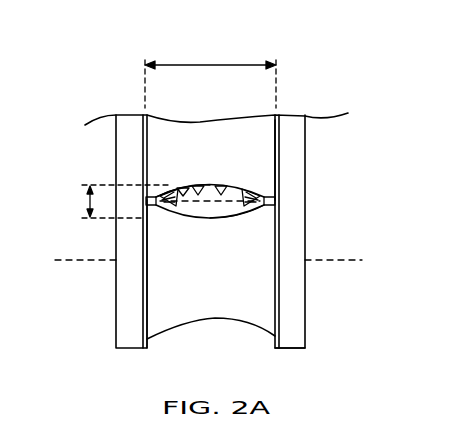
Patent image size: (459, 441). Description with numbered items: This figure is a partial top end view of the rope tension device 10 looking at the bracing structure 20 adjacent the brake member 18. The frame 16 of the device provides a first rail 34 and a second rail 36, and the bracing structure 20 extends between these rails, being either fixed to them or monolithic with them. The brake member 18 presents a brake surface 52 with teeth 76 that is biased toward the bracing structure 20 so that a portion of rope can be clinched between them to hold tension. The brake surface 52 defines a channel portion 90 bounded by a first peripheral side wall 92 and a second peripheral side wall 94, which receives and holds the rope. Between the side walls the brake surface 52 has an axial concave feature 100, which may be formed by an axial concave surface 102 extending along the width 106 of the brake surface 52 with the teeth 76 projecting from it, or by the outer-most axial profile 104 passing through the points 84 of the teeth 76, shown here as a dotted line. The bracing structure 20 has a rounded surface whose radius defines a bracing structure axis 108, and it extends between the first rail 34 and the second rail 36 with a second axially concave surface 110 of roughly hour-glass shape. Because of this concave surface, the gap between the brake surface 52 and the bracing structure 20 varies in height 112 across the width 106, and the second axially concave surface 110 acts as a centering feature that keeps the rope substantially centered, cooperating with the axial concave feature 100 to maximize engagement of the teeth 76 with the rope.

The rope tension device 10 is at (340, 92).
The frame 16 is at (316, 350).
The brake member 18 is at (268, 150).
The bracing structure 20 is at (237, 324).
The first rail 34 is at (117, 321).
The second rail 36 is at (305, 321).
The brake surface 52 is at (208, 220).
The teeth 76 is at (175, 197).
The points 84 is at (178, 212).
The channel portion 90 is at (248, 211).
The first peripheral side wall 92 is at (147, 203).
The second peripheral side wall 94 is at (278, 200).
The axial concave feature 100 is at (225, 172).
The axial concave surface 102 is at (185, 186).
The outer-most axial profile 104 is at (159, 211).
The width 106 is at (200, 63).
The bracing structure axis 108 is at (345, 262).
The second axially concave surface 110 is at (236, 212).
The height 112 is at (88, 200).